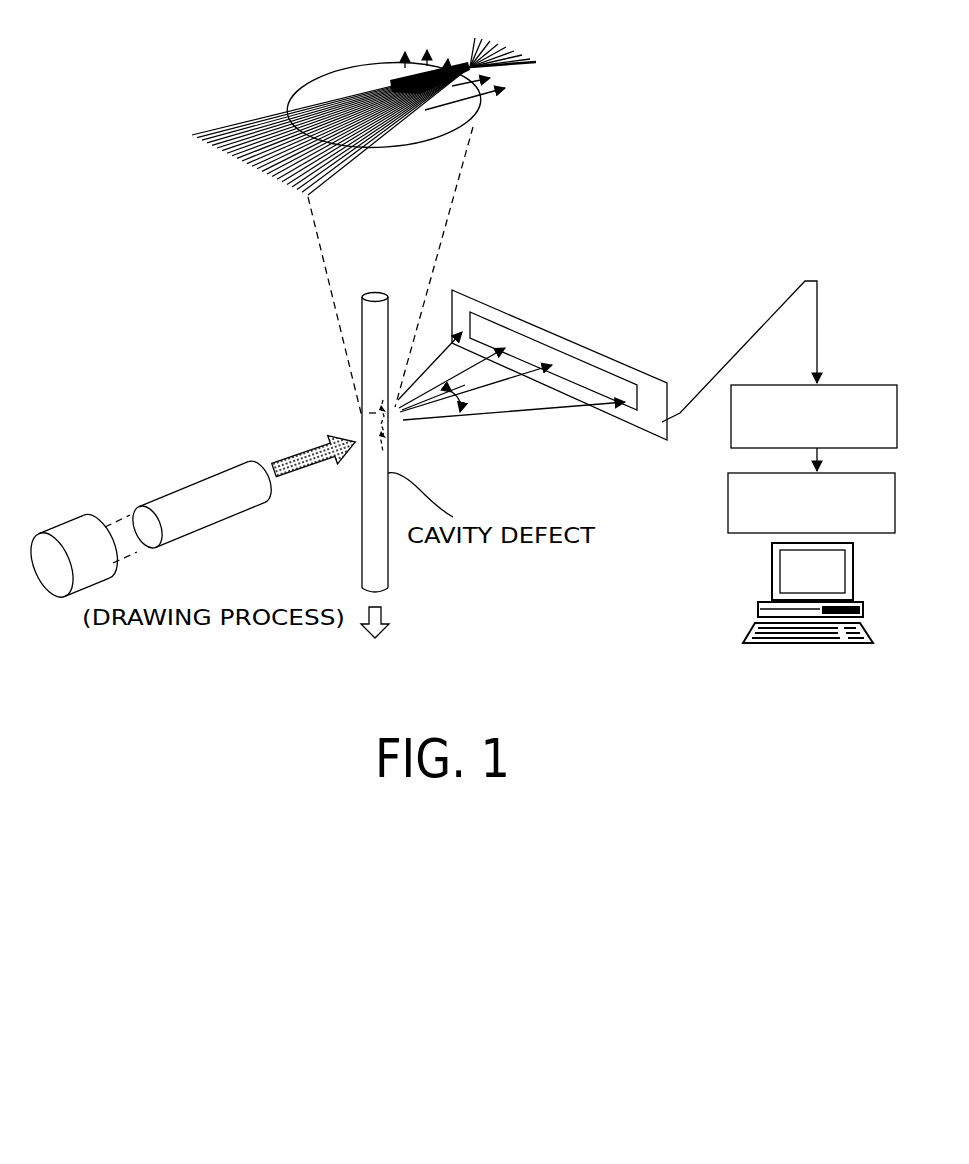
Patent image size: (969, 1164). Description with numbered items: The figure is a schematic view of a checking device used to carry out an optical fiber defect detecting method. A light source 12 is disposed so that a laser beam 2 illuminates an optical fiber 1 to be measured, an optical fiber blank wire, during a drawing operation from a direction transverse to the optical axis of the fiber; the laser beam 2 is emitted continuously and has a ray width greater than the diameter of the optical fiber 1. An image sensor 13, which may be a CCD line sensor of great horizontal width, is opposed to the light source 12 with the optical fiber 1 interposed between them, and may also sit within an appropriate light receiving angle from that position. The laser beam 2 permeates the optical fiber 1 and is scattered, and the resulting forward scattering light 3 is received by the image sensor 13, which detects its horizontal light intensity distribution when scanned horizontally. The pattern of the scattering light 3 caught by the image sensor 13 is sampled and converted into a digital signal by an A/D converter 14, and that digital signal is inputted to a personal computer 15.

The optical fiber 1 is at (368, 384).
The laser beam 2 is at (192, 493).
The scattering light 3 is at (511, 403).
The light source 12 is at (80, 525).
The image sensor 13 is at (527, 327).
The A/D converter 14 is at (862, 385).
The personal computer 15 is at (728, 503).